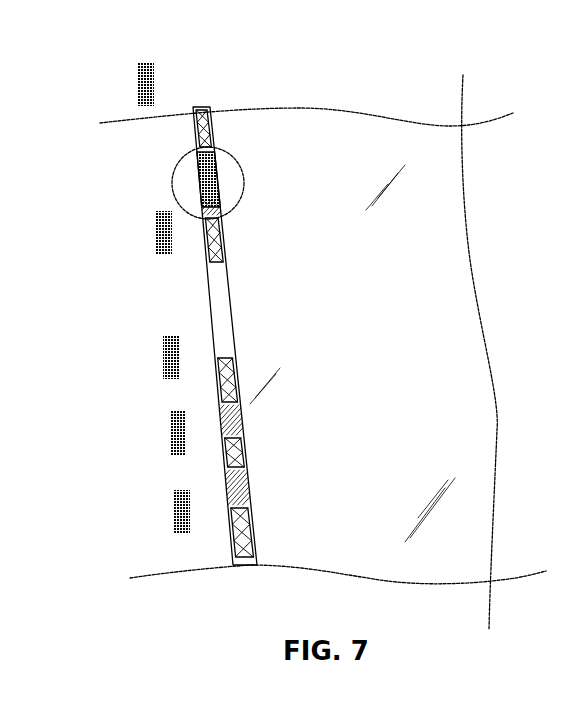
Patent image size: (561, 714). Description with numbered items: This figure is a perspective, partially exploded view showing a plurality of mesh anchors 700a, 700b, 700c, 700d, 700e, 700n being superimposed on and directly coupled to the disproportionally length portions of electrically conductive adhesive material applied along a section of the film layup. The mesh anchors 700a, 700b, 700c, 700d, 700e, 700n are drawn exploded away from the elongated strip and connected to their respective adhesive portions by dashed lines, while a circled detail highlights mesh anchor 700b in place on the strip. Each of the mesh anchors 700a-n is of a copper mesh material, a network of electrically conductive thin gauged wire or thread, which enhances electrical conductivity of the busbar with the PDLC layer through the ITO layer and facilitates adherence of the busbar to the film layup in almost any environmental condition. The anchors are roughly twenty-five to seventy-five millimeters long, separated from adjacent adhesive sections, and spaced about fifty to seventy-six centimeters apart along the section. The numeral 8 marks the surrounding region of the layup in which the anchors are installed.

The aircraft component / blade surface 8 is at (240, 166).
The mesh anchor 700a is at (194, 106).
The mesh anchor 700b is at (200, 184).
The mesh anchor 700c is at (207, 255).
The mesh anchor 700d is at (222, 383).
The mesh anchor 700e is at (229, 458).
The mesh anchor 700n is at (233, 538).